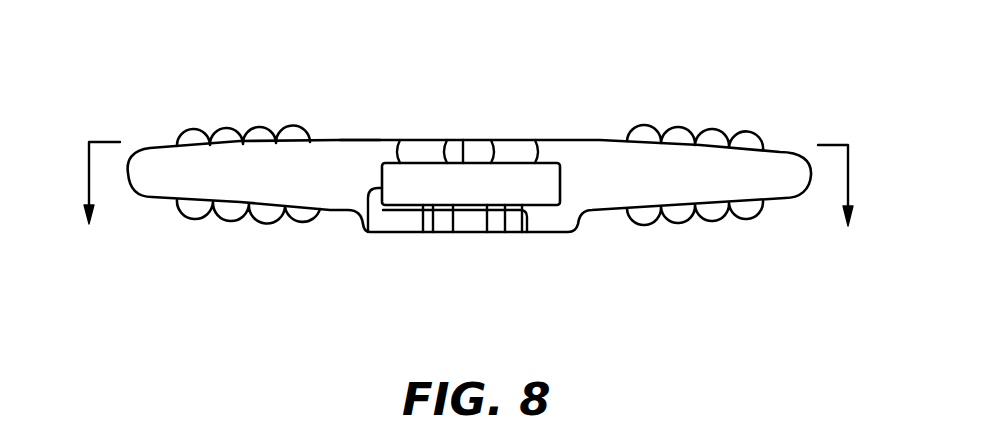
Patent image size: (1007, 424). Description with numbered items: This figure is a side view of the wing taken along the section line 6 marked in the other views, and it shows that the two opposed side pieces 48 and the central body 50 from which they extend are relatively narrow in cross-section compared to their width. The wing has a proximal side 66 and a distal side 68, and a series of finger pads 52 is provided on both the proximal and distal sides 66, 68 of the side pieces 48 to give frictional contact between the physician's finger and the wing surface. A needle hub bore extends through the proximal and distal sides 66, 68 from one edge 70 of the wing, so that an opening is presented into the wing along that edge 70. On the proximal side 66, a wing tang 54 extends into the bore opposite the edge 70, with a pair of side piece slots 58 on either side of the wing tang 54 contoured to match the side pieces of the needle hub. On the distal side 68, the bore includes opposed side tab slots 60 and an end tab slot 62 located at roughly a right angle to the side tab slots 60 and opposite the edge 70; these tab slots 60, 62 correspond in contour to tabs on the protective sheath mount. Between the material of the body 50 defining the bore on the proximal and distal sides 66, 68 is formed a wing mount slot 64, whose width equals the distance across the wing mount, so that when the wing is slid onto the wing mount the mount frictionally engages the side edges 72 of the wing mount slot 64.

The section line 6- 6 is at (462, 218).
The side pieces 48 is at (147, 152).
The central body 50 is at (548, 225).
The finger pads 52 is at (310, 119).
The wing tang 54 is at (463, 160).
The side piece slots 58 is at (419, 152).
The side tab slots 60 is at (430, 228).
The end tab slot 62 is at (477, 227).
The wing mount slot 64 is at (547, 187).
The proximal side 66 is at (751, 38).
The distal side 68 is at (659, 283).
The edge 70 is at (360, 156).
The side edges 72 is at (367, 230).